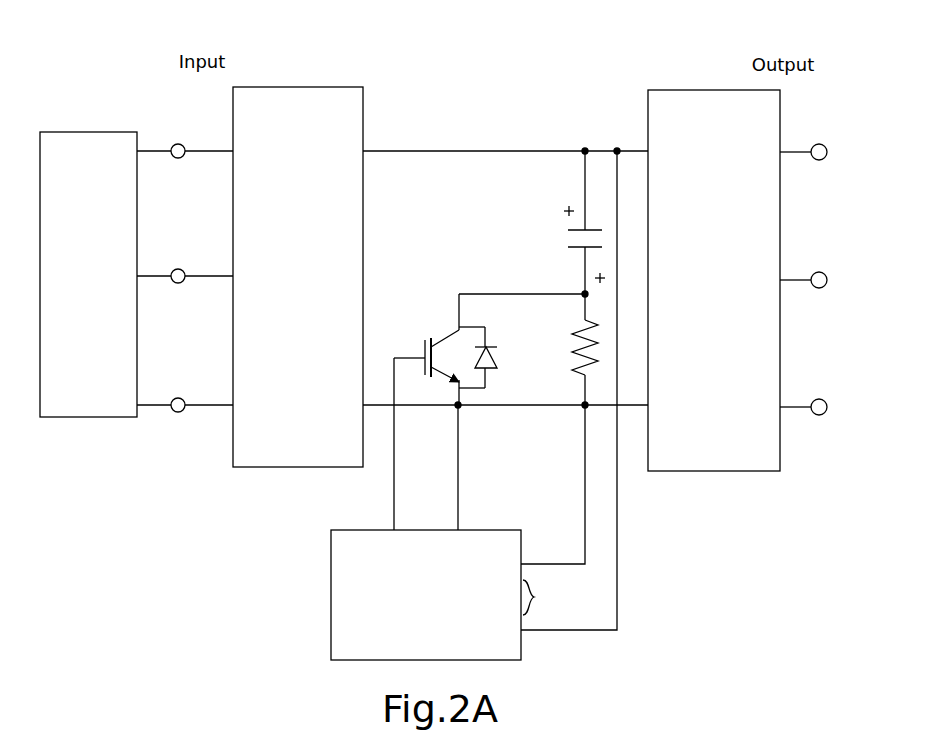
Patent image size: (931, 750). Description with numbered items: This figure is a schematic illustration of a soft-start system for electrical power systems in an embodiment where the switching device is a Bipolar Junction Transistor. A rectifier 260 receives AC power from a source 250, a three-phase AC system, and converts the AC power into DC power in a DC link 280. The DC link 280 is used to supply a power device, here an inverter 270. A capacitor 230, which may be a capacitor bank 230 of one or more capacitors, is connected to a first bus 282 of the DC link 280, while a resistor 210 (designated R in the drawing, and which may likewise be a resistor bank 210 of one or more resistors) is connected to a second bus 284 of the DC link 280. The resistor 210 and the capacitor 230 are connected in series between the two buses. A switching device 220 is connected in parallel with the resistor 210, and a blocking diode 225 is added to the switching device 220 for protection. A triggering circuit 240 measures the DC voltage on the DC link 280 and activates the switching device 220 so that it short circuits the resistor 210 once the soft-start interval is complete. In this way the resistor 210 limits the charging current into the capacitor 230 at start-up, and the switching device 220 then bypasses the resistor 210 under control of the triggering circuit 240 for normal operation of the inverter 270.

The DC link 280 is at (505, 271).
The first bus 282 is at (534, 151).
The second bus 284 is at (548, 408).
The capacitor 230 is at (560, 228).
The resistor 210 is at (572, 340).
The switching device 220 is at (423, 337).
The blocking diode 225 is at (496, 376).
The triggering circuit 240 is at (330, 602).
The source 250 is at (90, 418).
The rectifier 260 is at (300, 468).
The inverter 270 is at (720, 473).